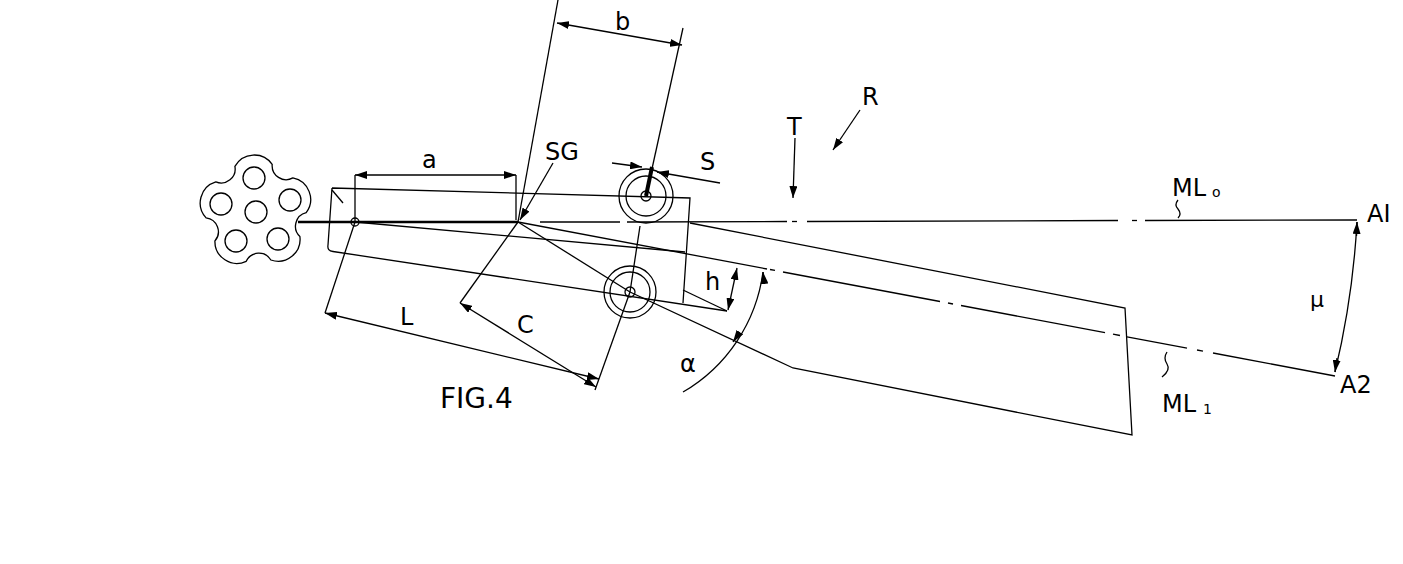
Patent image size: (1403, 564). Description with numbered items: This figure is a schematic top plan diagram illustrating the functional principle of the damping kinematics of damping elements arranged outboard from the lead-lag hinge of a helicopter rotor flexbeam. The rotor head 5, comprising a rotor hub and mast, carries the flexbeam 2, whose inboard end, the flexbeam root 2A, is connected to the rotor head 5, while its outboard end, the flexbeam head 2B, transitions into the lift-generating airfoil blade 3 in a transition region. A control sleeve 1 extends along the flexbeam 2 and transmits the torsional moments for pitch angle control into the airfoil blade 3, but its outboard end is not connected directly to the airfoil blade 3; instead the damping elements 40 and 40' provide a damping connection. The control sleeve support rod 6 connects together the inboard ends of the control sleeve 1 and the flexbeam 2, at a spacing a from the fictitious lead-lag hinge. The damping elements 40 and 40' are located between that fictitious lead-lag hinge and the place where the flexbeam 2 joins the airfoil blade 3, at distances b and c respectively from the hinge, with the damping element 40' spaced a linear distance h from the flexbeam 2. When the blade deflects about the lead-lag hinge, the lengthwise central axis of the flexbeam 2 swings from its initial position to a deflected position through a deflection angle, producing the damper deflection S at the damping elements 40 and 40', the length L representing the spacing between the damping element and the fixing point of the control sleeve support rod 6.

The control sleeve 1 is at (408, 186).
The flexbeam 2 is at (460, 207).
The flexbeam root 2A is at (322, 205).
The flexbeam head 2B is at (713, 258).
The airfoil blade 3 is at (950, 380).
The rotor head 5 is at (216, 230).
The control sleeve support rod 6 is at (347, 227).
The damping element 40 is at (635, 154).
The damping element 40' is at (642, 359).